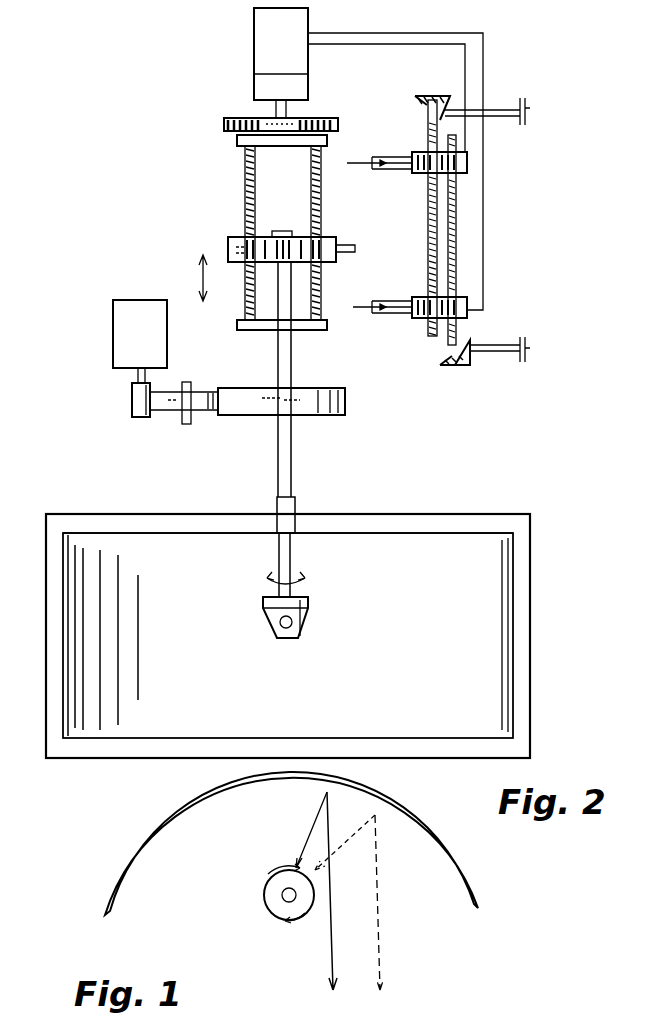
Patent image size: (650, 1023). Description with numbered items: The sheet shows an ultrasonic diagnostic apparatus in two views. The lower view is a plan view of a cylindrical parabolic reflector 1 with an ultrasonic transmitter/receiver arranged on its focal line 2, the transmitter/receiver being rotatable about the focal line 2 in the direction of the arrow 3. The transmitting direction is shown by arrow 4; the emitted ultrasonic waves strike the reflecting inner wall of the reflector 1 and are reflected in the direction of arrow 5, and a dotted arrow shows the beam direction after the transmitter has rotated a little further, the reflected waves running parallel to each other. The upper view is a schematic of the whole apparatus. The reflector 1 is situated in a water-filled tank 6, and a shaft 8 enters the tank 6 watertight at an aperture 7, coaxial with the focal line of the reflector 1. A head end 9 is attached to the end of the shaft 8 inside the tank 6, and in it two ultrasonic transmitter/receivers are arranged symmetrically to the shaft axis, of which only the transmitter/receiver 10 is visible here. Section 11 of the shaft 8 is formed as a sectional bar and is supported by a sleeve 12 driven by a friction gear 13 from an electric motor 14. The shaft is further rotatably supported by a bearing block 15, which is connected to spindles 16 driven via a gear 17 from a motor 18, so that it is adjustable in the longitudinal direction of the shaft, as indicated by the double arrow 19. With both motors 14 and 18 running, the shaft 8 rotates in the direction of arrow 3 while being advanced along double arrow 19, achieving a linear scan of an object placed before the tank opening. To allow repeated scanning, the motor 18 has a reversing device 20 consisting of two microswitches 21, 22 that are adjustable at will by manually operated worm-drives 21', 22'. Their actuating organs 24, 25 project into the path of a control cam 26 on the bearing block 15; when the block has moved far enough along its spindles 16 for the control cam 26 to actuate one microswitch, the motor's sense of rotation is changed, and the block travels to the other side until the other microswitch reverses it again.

In FIG. 2, the cylindrical parabolic reflector 1 is at (418, 545).
In FIG. 1, the cylindrical parabolic reflector 1 is at (437, 857).
In FIG. 1, the focal line 2 is at (286, 898).
In FIG. 2, the arrow of rotation direction 3 is at (297, 578).
In FIG. 1, the arrow of rotation direction 3 is at (302, 920).
In FIG. 1, the arrow of transmitting direction 4 is at (298, 858).
In FIG. 1, the arrow of reflected direction 5 is at (332, 948).
In FIG. 2, the tank 6 is at (531, 665).
In FIG. 2, the aperture 7 is at (297, 537).
In FIG. 2, the shaft 8 is at (281, 562).
In FIG. 2, the head end 9 is at (265, 605).
In FIG. 2, the ultrasonic transmitter/receiver 10 is at (288, 632).
In FIG. 2, the shaft section 11 is at (265, 451).
In FIG. 2, the sleeve 12 is at (331, 415).
In FIG. 2, the friction gear 13 is at (178, 421).
In FIG. 2, the electric motor 14 is at (113, 341).
In FIG. 2, the bearing block 15 is at (228, 243).
In FIG. 2, the spindles 16 is at (312, 208).
In FIG. 2, the gear 17 is at (268, 117).
In FIG. 2, the motor 18 is at (262, 31).
In FIG. 2, the double arrow of longitudinal adjustment 19 is at (202, 271).
In FIG. 2, the reversing device 20 is at (416, 238).
In FIG. 2, the microswitch 21 is at (426, 144).
In FIG. 2, the worm-drive 21' is at (496, 126).
In FIG. 2, the microswitch 22 is at (427, 291).
In FIG. 2, the worm-drive 22' is at (509, 347).
In FIG. 2, the actuating organ 24 is at (362, 170).
In FIG. 2, the actuating organ 25 is at (362, 316).
In FIG. 2, the control cam 26 is at (352, 253).